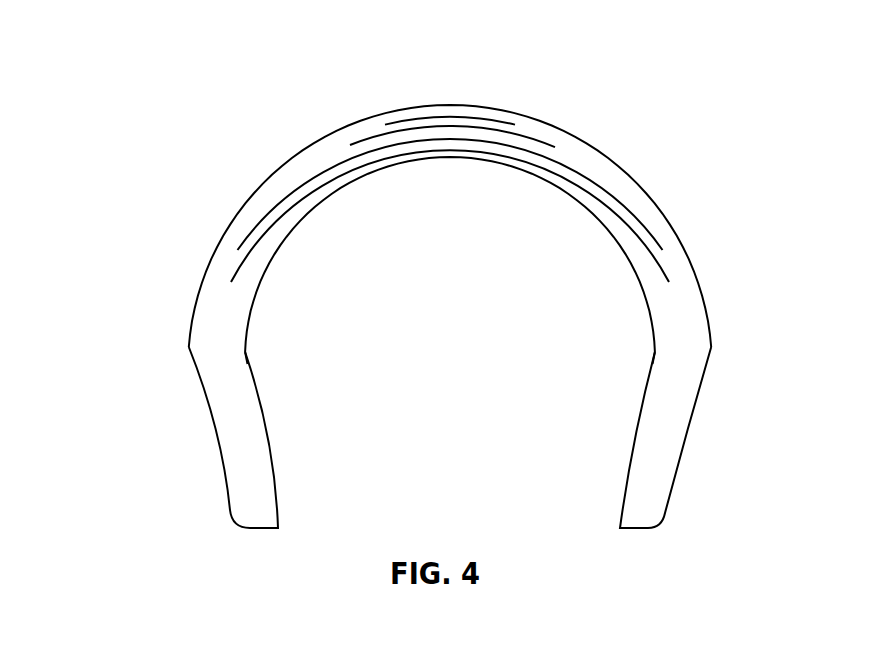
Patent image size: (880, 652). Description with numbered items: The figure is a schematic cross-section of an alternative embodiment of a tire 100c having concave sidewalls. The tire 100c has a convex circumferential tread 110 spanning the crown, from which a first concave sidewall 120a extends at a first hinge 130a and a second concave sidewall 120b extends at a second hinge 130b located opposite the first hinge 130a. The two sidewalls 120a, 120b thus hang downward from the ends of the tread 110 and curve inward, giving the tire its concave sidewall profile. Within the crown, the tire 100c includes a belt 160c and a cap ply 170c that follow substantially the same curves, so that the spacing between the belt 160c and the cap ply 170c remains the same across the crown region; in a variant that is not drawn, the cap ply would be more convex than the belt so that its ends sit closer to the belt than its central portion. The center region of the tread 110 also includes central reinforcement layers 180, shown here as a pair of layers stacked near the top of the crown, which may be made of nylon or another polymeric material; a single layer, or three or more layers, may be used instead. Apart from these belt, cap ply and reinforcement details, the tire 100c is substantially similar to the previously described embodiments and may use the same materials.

The tire 100c is at (172, 86).
The convex circumferential tread 110 is at (530, 118).
The first concave sidewall 120a is at (222, 408).
The second concave sidewall 120b is at (668, 413).
The first hinge 130a is at (243, 350).
The second hinge 130b is at (657, 352).
The belt 160c is at (647, 247).
The cap ply 170c is at (598, 187).
The central reinforcement layers 180 is at (380, 133).